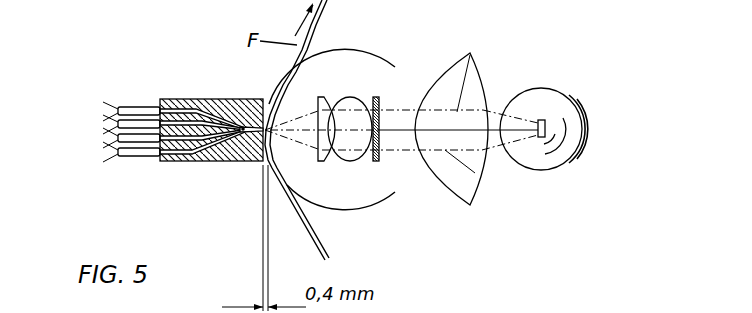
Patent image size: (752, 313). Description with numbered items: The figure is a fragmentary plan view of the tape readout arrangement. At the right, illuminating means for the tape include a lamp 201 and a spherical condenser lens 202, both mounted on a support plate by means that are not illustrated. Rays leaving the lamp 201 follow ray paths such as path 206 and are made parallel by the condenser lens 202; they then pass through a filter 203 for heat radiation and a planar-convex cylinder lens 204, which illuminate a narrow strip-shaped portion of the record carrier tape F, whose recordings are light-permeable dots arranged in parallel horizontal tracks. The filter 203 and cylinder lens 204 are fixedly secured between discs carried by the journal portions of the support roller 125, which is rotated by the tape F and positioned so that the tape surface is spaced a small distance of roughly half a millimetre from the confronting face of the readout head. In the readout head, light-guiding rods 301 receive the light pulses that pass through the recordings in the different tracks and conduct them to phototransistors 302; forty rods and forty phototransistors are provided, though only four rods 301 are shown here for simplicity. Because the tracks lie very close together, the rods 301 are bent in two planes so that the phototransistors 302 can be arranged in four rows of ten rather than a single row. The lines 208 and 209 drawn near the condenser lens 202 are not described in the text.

The light-guiding rods 301 is at (207, 108).
The phototransistors 302 is at (132, 108).
The support roller 125 is at (363, 50).
The planar-convex cylinder lens 204 is at (322, 100).
The filter for heat radiation 203 is at (373, 100).
The spherical condenser lens 202 is at (457, 70).
The upper marginal ray 208 is at (467, 128).
The lower marginal ray 209 is at (475, 173).
The ray path 206 is at (508, 93).
The lamp 201 is at (567, 118).